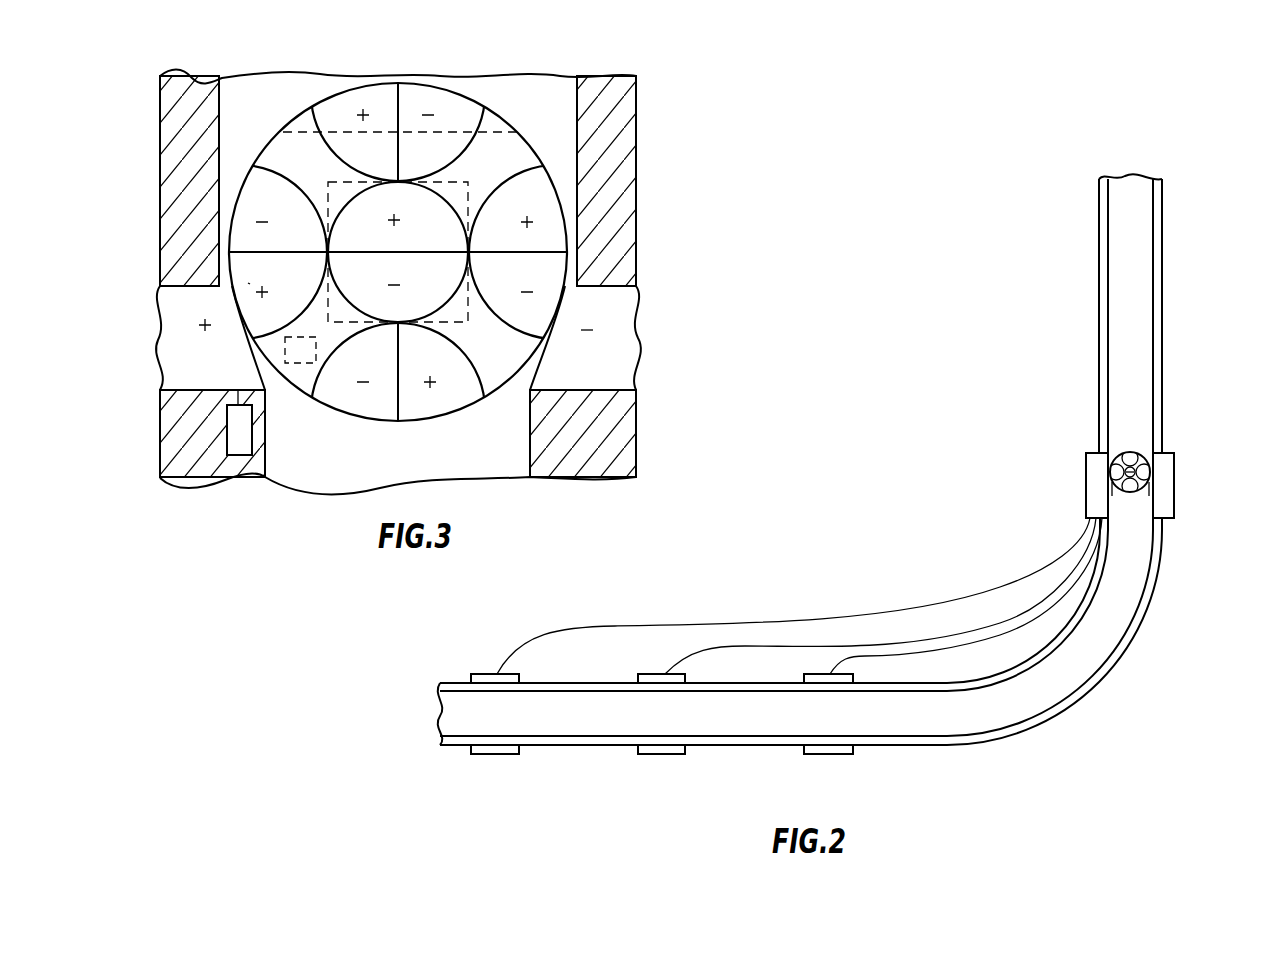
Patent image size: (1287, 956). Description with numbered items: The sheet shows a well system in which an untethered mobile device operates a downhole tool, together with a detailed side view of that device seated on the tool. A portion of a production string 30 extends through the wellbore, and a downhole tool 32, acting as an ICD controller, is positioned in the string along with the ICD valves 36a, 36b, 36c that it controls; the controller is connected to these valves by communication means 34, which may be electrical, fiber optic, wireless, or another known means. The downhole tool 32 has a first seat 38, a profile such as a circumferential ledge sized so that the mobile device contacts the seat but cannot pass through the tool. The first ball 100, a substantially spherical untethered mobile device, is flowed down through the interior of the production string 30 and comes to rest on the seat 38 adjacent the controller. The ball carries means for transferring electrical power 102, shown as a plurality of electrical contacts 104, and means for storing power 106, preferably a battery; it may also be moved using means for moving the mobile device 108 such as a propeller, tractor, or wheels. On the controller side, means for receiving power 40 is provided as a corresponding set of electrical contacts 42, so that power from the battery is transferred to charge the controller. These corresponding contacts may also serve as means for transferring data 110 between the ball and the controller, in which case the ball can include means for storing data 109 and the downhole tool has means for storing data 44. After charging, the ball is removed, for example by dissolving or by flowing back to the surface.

In FIG. 3, the production string 30 is at (577, 168).
In FIG. 2, the production string 30 is at (1107, 247).
In FIG. 3, the downhole tool 32 is at (658, 306).
In FIG. 2, the downhole tool 32 is at (1174, 510).
In FIG. 2, the communication means 34 is at (960, 605).
In FIG. 2, the ICD valve 36a is at (833, 755).
In FIG. 2, the ICD valve 36b is at (667, 755).
In FIG. 2, the ICD valve 36c is at (497, 755).
In FIG. 3, the first seat 38 is at (592, 392).
In FIG. 2, the first seat 38 is at (1150, 486).
In FIG. 3, the means for receiving power 40 is at (612, 340).
In FIG. 3, the electrical contacts 42 is at (200, 365).
In FIG. 3, the means for storing data 44 is at (237, 437).
In FIG. 3, the first ball 100 is at (260, 100).
In FIG. 2, the first ball 100 is at (1136, 452).
In FIG. 3, the means for transferring electrical power 102 is at (366, 110).
In FIG. 3, the electrical contacts 104 is at (250, 240).
In FIG. 3, the means for storing power 106 is at (468, 182).
In FIG. 3, the means for moving the mobile device 108 is at (303, 132).
In FIG. 3, the means for storing data 109 is at (295, 365).
In FIG. 3, the means for transferring data 110 is at (250, 283).